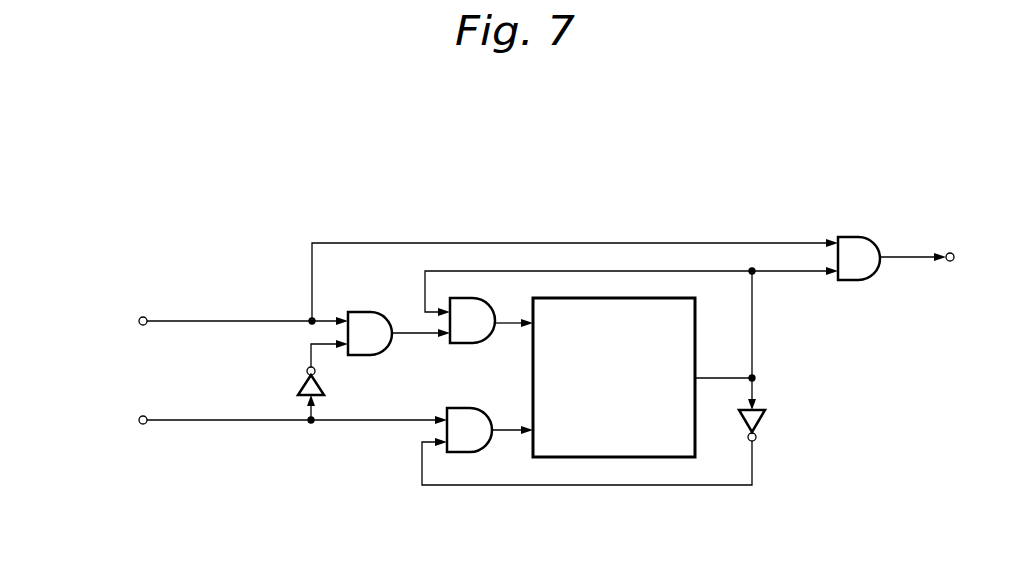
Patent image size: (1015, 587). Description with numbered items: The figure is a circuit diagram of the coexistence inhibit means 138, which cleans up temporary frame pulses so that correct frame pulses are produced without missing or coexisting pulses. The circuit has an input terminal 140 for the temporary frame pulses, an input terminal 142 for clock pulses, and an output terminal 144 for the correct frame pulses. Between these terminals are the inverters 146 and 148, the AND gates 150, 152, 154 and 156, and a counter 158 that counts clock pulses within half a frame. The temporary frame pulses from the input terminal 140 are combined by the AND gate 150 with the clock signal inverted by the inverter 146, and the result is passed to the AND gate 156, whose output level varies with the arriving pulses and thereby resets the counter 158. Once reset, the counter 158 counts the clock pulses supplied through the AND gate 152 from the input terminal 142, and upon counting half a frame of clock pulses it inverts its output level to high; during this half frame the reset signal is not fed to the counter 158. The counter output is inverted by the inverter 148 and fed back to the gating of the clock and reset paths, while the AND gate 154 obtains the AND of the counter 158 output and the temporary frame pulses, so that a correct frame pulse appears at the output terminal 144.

The coexistence inhibit means 138 is at (533, 332).
The input terminal 140 is at (140, 317).
The input terminal 142 is at (139, 424).
The output terminal 144 is at (955, 251).
The inverter 146 is at (298, 383).
The inverter 148 is at (764, 414).
The AND gate 150 is at (368, 312).
The AND gate 152 is at (470, 452).
The AND gate 154 is at (858, 237).
The AND gate 156 is at (468, 298).
The counter 158 is at (643, 298).